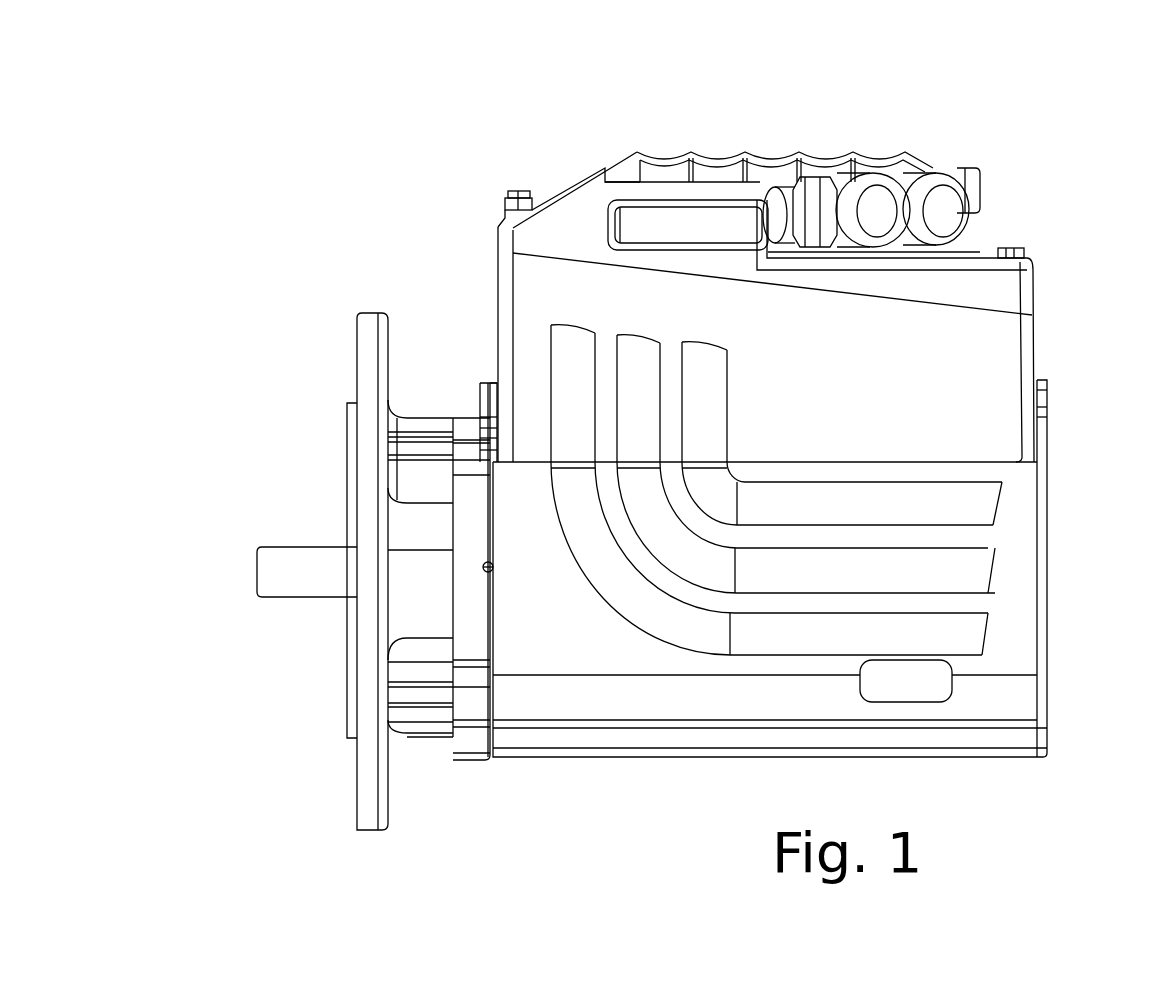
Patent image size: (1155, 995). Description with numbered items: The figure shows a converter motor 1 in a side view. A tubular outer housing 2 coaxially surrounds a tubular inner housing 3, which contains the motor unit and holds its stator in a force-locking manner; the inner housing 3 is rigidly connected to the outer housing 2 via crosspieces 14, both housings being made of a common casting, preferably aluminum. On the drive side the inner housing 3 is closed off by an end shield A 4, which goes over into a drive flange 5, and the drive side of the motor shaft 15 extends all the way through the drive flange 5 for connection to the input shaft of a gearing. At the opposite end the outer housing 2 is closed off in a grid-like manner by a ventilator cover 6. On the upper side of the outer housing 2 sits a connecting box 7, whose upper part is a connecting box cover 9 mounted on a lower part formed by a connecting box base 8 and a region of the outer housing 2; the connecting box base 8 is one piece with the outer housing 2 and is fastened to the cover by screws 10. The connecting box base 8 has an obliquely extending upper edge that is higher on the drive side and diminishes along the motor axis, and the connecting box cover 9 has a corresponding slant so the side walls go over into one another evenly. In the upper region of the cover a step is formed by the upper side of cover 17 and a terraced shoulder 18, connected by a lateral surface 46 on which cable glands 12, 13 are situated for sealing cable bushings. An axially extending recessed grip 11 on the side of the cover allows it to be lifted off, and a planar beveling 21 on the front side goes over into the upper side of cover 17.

The converter motor 1 is at (285, 777).
The outer housing 2 is at (613, 702).
The inner housing 3 is at (477, 630).
The end shield A 4 is at (420, 662).
The drive flange 5 is at (372, 795).
The ventilator cover 6 is at (1042, 702).
The connecting box 7 is at (366, 188).
The connecting box base 8 is at (960, 378).
The connecting box cover 9 is at (980, 287).
The screws 10 is at (518, 193).
The recessed grip 11 is at (677, 227).
The cable gland 12 is at (833, 208).
The cable gland 13 is at (977, 167).
The crosspieces 14 is at (486, 569).
The motor shaft 15 is at (292, 573).
The upper side of cover 17 is at (762, 140).
The shoulder 18 is at (984, 243).
The planar beveling 21 is at (550, 180).
The lateral surface 46 is at (905, 193).